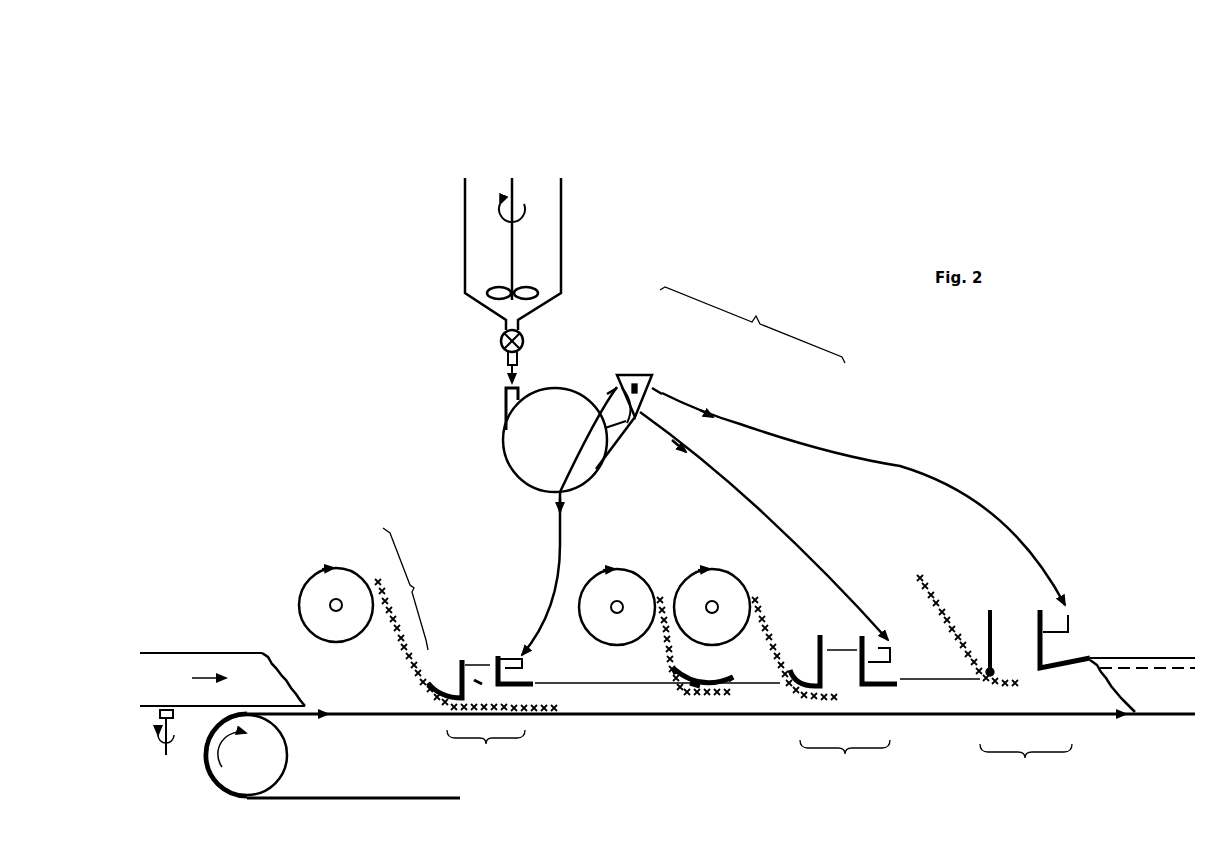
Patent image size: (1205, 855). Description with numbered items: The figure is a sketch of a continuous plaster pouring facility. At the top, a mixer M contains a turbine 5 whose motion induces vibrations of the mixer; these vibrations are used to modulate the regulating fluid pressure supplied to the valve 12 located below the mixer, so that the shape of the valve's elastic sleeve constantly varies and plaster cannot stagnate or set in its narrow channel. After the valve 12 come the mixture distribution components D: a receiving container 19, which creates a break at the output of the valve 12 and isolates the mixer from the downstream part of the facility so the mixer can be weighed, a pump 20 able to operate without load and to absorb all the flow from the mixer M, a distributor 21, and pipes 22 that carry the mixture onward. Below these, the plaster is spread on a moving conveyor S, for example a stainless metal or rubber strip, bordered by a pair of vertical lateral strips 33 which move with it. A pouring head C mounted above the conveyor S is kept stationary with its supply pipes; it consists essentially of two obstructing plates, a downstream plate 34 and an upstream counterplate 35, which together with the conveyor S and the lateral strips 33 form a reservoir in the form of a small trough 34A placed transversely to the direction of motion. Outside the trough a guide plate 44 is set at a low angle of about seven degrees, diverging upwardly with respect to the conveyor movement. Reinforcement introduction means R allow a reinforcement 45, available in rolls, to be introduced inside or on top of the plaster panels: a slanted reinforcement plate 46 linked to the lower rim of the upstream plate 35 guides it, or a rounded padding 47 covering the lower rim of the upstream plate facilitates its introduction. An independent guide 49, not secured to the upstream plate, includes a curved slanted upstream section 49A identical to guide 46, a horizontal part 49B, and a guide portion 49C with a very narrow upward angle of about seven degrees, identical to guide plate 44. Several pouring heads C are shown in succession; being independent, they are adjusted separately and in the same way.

The turbine 5 is at (542, 289).
The valve 12 is at (527, 339).
The receiving container 19 is at (502, 381).
The pump 20 is at (520, 441).
The distributor 21 is at (652, 375).
The pipes 22 is at (736, 419).
The lateral strips 33 is at (252, 692).
The downstream obstructing plate 34 is at (512, 652).
The small trough 34A is at (485, 683).
The upstream obstructing plate 35 is at (479, 680).
The guide plate 44 is at (532, 680).
The reinforcement 45 is at (388, 658).
The reinforcement plate 46 is at (436, 683).
The rounded padding 47 is at (985, 676).
The independent reinforcement guide 49 is at (708, 690).
The curved slanted upstream section 49A is at (678, 686).
The horizontal part 49B is at (698, 688).
The guide portion 49C is at (731, 683).
The mixer M is at (462, 295).
The mixture distribution components D is at (752, 325).
The reinforcement introduction means R is at (405, 589).
The conveyor S is at (611, 722).
The pouring head C is at (759, 755).